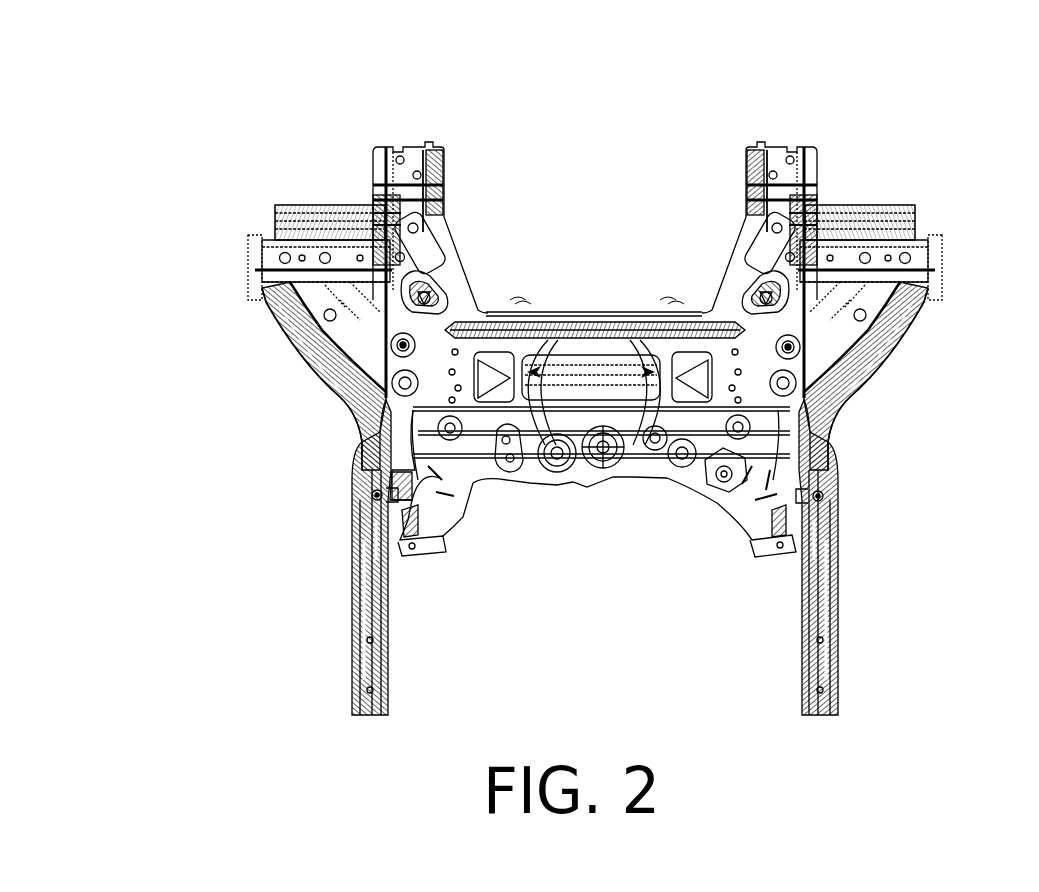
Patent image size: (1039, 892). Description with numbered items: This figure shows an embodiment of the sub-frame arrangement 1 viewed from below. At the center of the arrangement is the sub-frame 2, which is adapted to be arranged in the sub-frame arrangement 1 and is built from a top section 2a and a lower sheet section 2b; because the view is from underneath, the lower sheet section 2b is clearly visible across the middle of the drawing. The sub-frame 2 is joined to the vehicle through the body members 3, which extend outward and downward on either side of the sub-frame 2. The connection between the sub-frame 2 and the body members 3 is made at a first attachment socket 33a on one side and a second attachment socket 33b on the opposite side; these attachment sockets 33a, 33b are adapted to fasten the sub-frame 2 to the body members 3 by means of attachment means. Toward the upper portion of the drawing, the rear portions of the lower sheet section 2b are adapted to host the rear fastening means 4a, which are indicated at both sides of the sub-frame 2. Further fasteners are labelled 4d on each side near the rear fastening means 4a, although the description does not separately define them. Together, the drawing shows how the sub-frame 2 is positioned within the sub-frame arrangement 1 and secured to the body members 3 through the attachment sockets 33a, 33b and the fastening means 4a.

The sub-frame arrangement 1 is at (464, 116).
The sub-frame 2 is at (598, 284).
The top section 2a is at (368, 490).
The lower sheet section 2b is at (555, 485).
The body members 3 is at (363, 597).
The first attachment socket 33a is at (376, 496).
The second attachment socket 33b is at (815, 497).
The rear fastening means 4a is at (397, 257).
The fastening bolt 4d is at (400, 345).